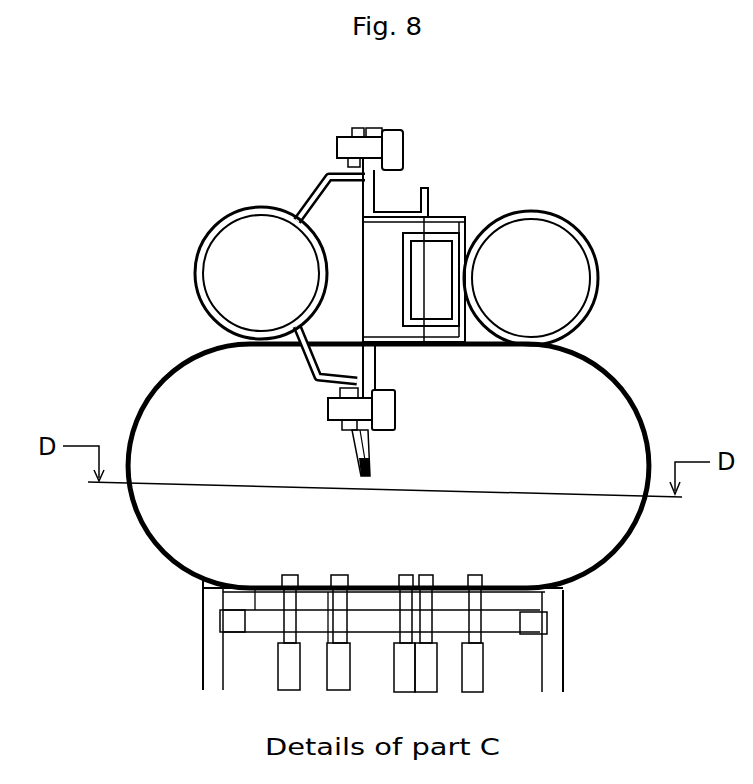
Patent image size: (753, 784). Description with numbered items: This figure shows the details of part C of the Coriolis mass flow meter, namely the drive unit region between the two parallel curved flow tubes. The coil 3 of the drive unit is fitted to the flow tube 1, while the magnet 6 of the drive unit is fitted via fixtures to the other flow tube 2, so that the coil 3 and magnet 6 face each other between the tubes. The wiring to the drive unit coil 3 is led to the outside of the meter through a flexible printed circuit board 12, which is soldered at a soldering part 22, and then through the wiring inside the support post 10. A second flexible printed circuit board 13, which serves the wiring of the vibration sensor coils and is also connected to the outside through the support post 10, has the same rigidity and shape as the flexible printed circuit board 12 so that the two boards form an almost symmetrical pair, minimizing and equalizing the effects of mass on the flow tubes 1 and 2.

The flow tube 1 is at (248, 209).
The flow tube 2 is at (578, 228).
The coil 3 is at (407, 228).
The magnet 6 is at (433, 257).
The support post 10 is at (553, 670).
The flexible printed circuit board 12 is at (147, 395).
The flexible printed circuit board 13 is at (635, 387).
The soldering part 22 is at (357, 472).